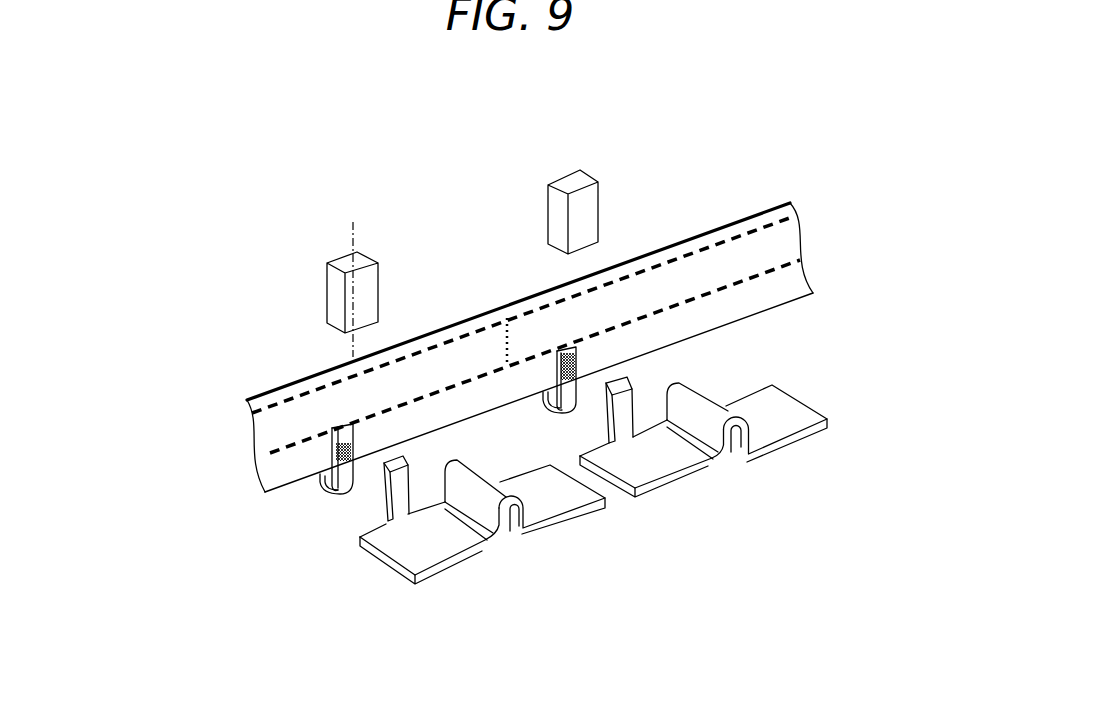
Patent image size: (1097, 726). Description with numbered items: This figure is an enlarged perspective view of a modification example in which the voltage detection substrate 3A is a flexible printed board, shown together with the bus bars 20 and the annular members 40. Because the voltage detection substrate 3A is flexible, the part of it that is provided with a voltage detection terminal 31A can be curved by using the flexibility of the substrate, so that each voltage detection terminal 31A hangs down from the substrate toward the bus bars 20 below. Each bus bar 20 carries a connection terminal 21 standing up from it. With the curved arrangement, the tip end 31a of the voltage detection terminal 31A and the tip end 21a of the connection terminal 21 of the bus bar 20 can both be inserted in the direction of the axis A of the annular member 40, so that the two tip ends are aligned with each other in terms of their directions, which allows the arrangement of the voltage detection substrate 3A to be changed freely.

The voltage detection substrate 3A is at (713, 231).
The annular member 40 is at (340, 258).
The axis of the annular member A is at (353, 242).
The voltage detection terminal 31A is at (446, 397).
The tip end of the voltage detection terminal 31a is at (341, 425).
The bus bar 20 is at (577, 441).
The connection terminal 21 is at (455, 398).
The tip end of the connection terminal 21a is at (392, 460).